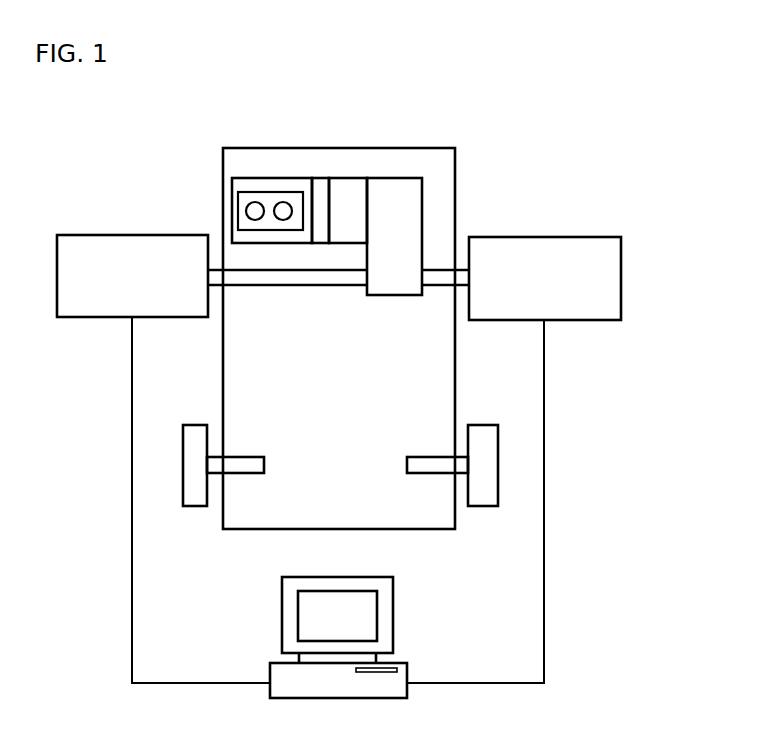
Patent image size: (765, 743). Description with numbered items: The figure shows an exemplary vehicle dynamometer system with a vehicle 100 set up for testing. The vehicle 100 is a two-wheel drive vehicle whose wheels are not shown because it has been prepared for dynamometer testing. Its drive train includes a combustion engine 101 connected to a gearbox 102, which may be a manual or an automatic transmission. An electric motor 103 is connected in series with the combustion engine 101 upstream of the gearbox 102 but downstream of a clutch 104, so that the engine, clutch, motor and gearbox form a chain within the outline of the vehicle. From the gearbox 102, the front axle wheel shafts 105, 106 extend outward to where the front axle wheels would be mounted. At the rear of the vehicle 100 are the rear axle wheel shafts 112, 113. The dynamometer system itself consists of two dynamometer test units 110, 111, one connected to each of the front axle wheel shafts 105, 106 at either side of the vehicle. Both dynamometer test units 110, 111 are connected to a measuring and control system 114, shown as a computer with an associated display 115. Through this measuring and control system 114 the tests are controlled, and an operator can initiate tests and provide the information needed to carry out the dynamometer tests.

The vehicle 100 is at (439, 163).
The combustion engine 101 is at (272, 187).
The gearbox 102 is at (402, 219).
The electric motor 103 is at (353, 193).
The clutch 104 is at (318, 193).
The front axle wheel shaft 105 is at (237, 275).
The front axle wheel shaft 106 is at (445, 278).
The dynamometer test unit 110 is at (112, 243).
The dynamometer test unit 111 is at (613, 278).
The rear axle wheel shaft 112 is at (238, 465).
The rear axle wheel shaft 113 is at (428, 465).
The measuring and control system 114 is at (350, 683).
The display 115 is at (366, 602).